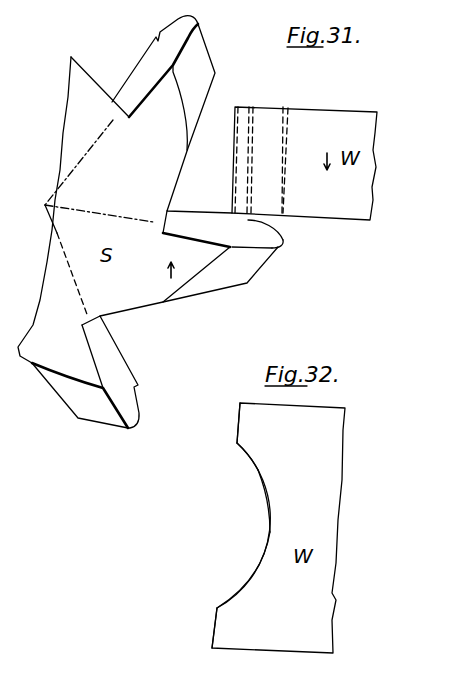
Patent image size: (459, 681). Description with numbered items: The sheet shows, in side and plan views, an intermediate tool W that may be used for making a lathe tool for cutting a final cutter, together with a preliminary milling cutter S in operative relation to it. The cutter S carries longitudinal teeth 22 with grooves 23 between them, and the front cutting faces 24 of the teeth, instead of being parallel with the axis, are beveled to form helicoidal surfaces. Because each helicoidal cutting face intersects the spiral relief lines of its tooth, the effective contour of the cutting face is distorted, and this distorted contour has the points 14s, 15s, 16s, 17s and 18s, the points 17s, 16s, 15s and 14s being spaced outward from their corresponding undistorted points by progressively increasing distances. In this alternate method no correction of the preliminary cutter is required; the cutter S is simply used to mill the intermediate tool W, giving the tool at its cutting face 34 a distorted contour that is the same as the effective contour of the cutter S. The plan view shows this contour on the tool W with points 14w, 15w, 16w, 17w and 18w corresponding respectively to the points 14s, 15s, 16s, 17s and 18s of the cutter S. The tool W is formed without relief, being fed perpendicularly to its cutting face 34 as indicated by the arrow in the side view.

In FIG. 31, the longitudinal teeth 22 is at (202, 78).
In FIG. 31, the grooves 23 is at (200, 160).
In FIG. 31, the front cutting faces 24 is at (174, 38).
In FIG. 31, the cutting face 34 is at (317, 108).
In FIG. 32, the cutting face 34 is at (312, 418).
In FIG. 31, the contour point 14w is at (262, 107).
In FIG. 32, the contour point 14w is at (240, 403).
In FIG. 31, the contour point 15w is at (247, 106).
In FIG. 32, the contour point 15w is at (237, 443).
In FIG. 31, the contour point 16w is at (288, 108).
In FIG. 32, the contour point 16w is at (270, 532).
In FIG. 31, the contour point 17w is at (238, 107).
In FIG. 32, the contour point 17w is at (217, 608).
In FIG. 31, the contour point 18w is at (222, 150).
In FIG. 32, the contour point 18w is at (212, 648).
In FIG. 31, the contour point 14s is at (267, 222).
In FIG. 31, the contour point 15s is at (248, 220).
In FIG. 31, the contour point 16s is at (282, 243).
In FIG. 31, the contour point 17s is at (230, 247).
In FIG. 31, the contour point 18s is at (230, 249).